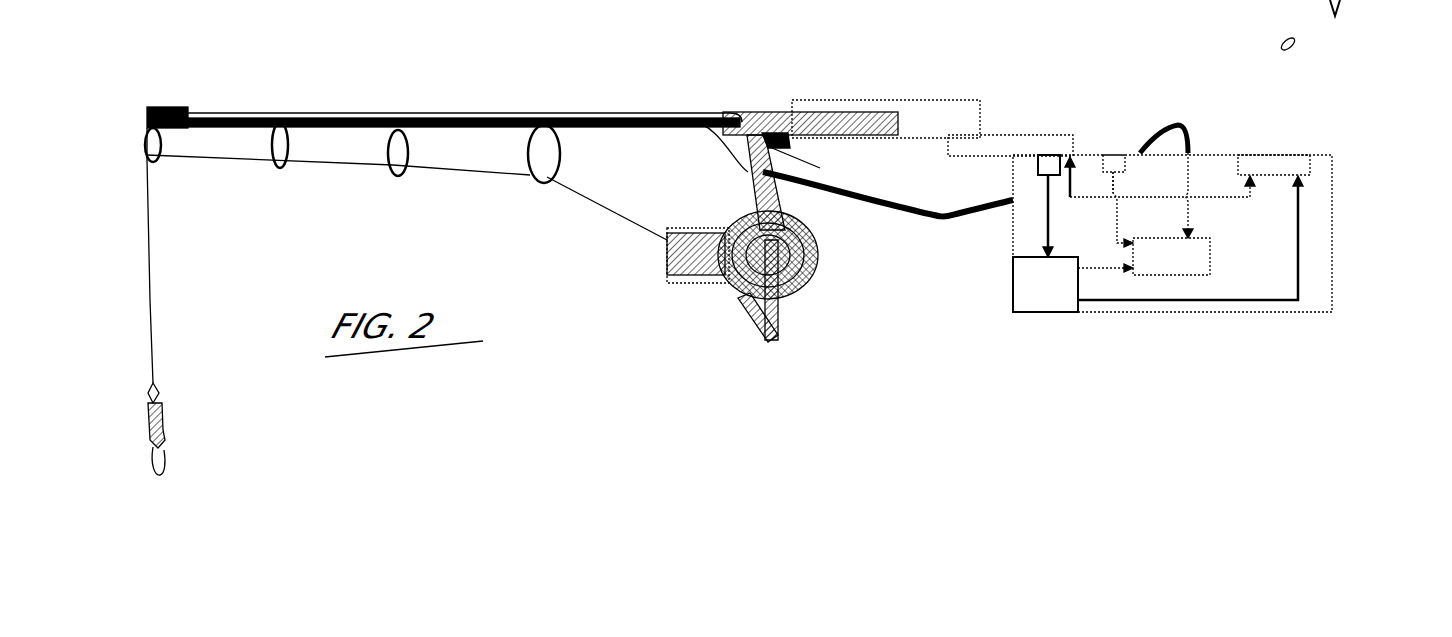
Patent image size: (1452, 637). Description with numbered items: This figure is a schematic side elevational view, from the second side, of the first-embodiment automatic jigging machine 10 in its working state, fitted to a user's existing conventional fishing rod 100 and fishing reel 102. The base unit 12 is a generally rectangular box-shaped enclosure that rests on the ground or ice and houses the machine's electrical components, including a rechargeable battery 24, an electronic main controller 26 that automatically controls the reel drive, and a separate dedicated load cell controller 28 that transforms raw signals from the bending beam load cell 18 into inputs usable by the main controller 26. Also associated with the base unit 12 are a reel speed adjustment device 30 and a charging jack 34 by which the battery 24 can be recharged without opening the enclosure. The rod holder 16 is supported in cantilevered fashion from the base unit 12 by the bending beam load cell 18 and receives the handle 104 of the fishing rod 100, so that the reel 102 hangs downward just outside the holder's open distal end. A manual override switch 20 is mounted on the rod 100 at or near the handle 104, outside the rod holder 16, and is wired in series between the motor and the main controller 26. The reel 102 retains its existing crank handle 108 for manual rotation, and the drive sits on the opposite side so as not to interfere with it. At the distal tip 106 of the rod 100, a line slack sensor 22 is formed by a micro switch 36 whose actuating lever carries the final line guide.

The automatic jigging machine 10 is at (1268, 85).
The base unit 12 is at (1340, 262).
The rod holder 16 is at (940, 117).
The bending beam load cell 18 is at (1002, 143).
The manual override switch 20 is at (822, 166).
The line slack sensor 22 is at (179, 100).
The rechargeable battery 24 is at (1045, 284).
The electronic main controller 26 is at (1190, 259).
The load cell controller 28 is at (1278, 160).
The reel speed adjustment device 30 is at (1113, 155).
The charging jack 34 is at (1040, 165).
The micro switch 36 is at (186, 113).
The fishing rod 100 is at (646, 136).
The fishing reel 102 is at (809, 298).
The handle 104 is at (757, 128).
The distal tip 106 is at (142, 114).
The crank handle 108 is at (753, 327).